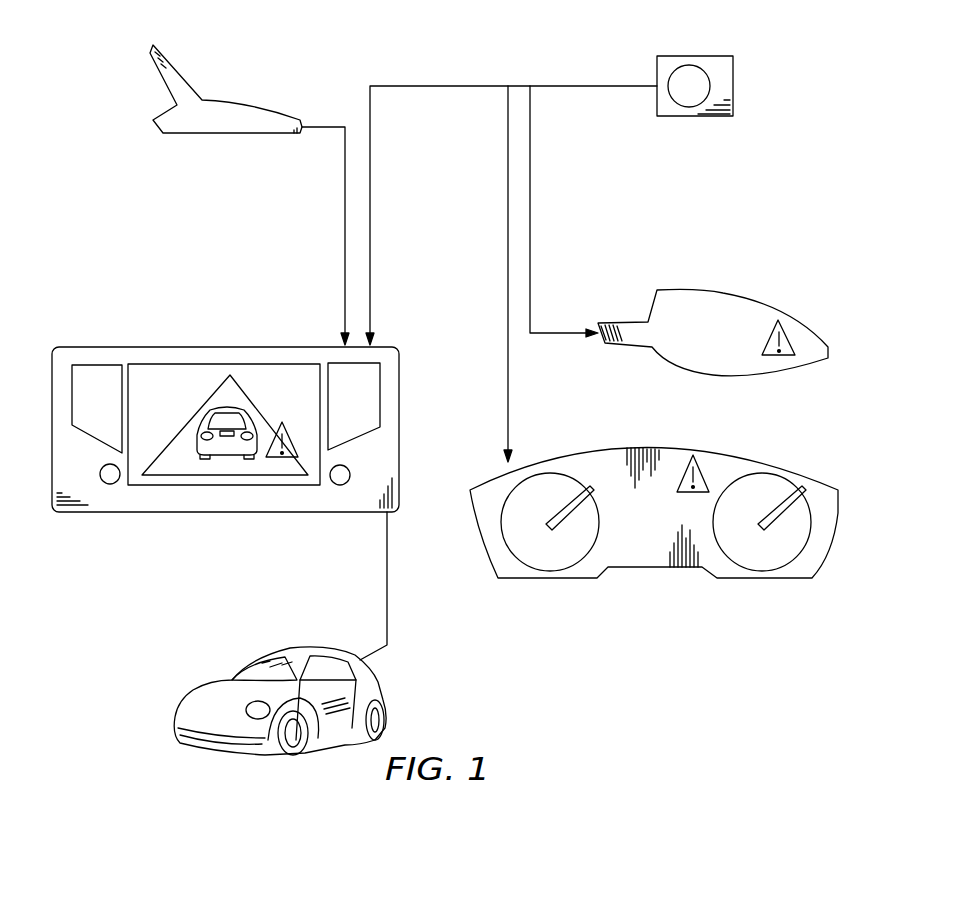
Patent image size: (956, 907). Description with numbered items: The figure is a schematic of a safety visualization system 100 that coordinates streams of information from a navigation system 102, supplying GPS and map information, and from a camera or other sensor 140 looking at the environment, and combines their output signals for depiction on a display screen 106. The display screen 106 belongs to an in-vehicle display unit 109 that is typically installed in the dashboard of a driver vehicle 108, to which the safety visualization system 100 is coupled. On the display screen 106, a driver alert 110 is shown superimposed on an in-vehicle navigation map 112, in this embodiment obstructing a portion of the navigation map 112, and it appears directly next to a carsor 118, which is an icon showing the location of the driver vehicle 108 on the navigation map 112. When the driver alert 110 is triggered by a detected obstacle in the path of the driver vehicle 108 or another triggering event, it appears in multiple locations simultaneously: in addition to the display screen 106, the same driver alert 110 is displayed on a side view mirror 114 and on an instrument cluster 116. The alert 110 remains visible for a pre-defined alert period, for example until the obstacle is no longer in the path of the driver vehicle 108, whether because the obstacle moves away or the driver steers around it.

The safety visualization system 100 is at (433, 33).
The navigation system 102 is at (228, 82).
The display screen 106 is at (138, 468).
The driver vehicle 108 is at (297, 647).
The in-vehicle display unit 109 is at (63, 358).
The driver alert 110 is at (773, 330).
The in-vehicle navigation map 112 is at (193, 400).
The side view mirror 114 is at (677, 290).
The instrument cluster 116 is at (478, 535).
The carsor 118 is at (240, 422).
The camera or other sensor 140 is at (733, 85).